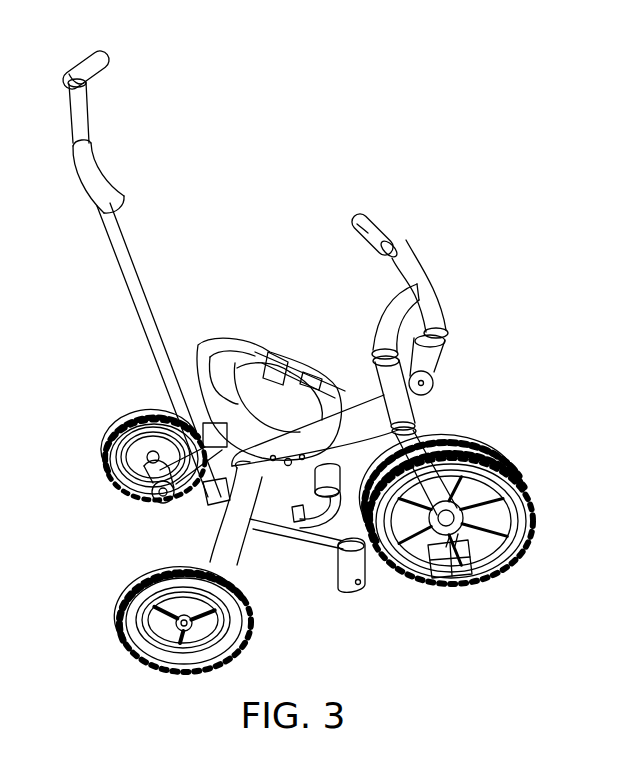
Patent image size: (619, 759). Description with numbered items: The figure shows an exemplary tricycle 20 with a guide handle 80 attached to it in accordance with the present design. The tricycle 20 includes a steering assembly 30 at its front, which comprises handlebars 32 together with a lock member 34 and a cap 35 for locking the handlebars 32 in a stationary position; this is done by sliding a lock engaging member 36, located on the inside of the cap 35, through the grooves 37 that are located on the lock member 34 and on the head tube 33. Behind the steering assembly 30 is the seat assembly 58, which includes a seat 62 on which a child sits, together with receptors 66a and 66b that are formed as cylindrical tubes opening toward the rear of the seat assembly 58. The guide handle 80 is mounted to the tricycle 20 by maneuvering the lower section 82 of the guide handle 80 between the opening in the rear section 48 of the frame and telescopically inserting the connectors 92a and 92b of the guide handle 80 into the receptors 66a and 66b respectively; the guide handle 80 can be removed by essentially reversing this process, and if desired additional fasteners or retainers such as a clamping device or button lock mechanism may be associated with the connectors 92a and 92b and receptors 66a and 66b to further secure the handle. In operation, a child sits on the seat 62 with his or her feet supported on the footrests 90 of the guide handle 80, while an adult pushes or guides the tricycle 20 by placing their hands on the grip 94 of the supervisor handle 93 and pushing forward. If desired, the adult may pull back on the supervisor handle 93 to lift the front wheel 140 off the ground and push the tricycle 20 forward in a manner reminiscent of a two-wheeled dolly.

The tricycle 20 is at (455, 260).
The steering assembly 30 is at (495, 356).
The handlebars 32 is at (412, 258).
The head tube 33 is at (420, 406).
The lock member 34 is at (380, 378).
The cap 35 is at (342, 340).
The lock engaging member 36 is at (383, 340).
The grooves 37 is at (436, 352).
The rear section 48 is at (252, 556).
The seat assembly 58 is at (222, 298).
The seat 62 is at (214, 345).
The receptor 66a is at (213, 480).
The receptor 66b is at (197, 400).
The guide handle 80 is at (138, 119).
The lower section 82 is at (307, 560).
The footrests 90 is at (316, 486).
The connector 92a is at (158, 496).
The connector 92b is at (108, 469).
The supervisor handle 93 is at (70, 122).
The grip 94 is at (81, 62).
The front wheel 140 is at (533, 481).